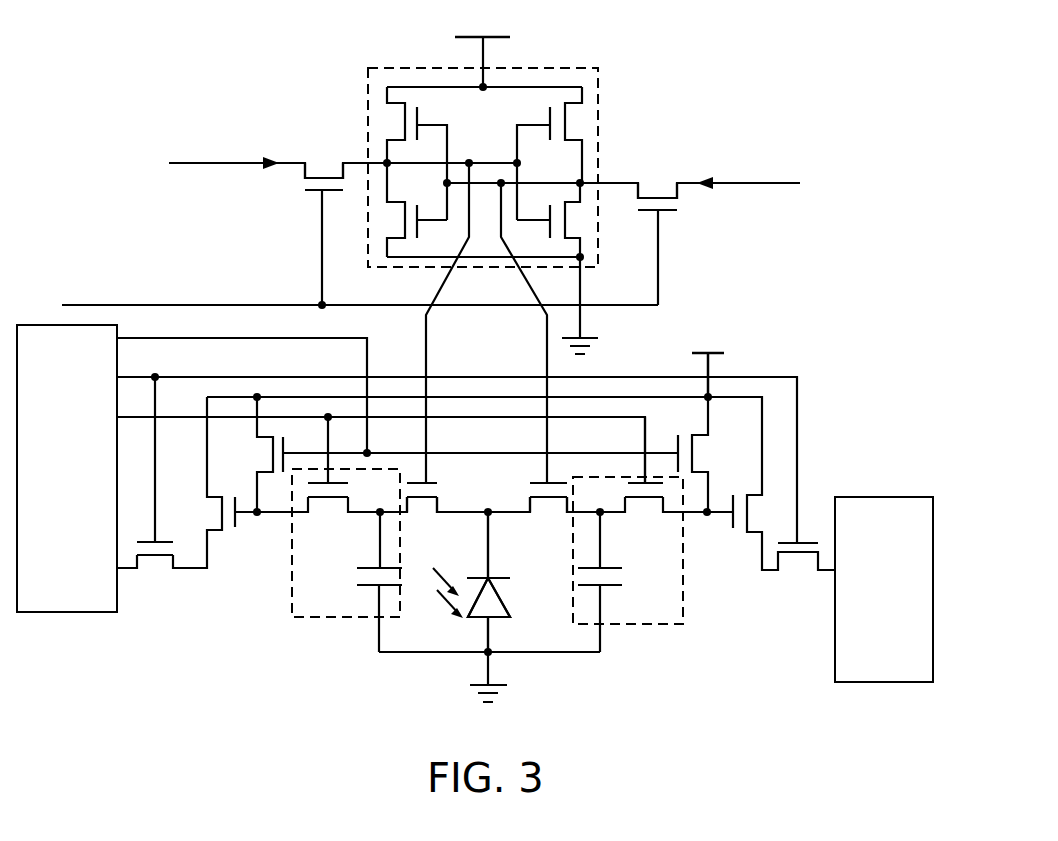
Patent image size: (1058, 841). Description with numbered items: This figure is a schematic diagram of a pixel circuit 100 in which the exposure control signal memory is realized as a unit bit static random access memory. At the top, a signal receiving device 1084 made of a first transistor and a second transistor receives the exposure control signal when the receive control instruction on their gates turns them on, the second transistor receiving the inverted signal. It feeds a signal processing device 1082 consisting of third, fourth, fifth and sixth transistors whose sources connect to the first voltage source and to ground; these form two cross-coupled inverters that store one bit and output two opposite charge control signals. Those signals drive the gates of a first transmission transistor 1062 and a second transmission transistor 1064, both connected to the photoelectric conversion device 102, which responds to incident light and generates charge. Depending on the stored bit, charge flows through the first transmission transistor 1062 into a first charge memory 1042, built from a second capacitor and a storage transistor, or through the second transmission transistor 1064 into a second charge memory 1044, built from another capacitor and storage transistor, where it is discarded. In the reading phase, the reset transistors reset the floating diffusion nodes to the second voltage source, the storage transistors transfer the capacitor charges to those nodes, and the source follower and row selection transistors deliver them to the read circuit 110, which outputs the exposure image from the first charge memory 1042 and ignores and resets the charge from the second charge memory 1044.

The pixel circuit 100 is at (662, 108).
The photoelectric conversion device 102 is at (497, 620).
The read circuit 110 is at (71, 612).
The first charge memory 1042 is at (322, 617).
The second charge memory 1044 is at (675, 624).
The first transmission transistor 1062 is at (428, 493).
The second transmission transistor 1064 is at (563, 503).
The signal processing device 1082 is at (588, 68).
The signal receiving device 1084 is at (310, 192).